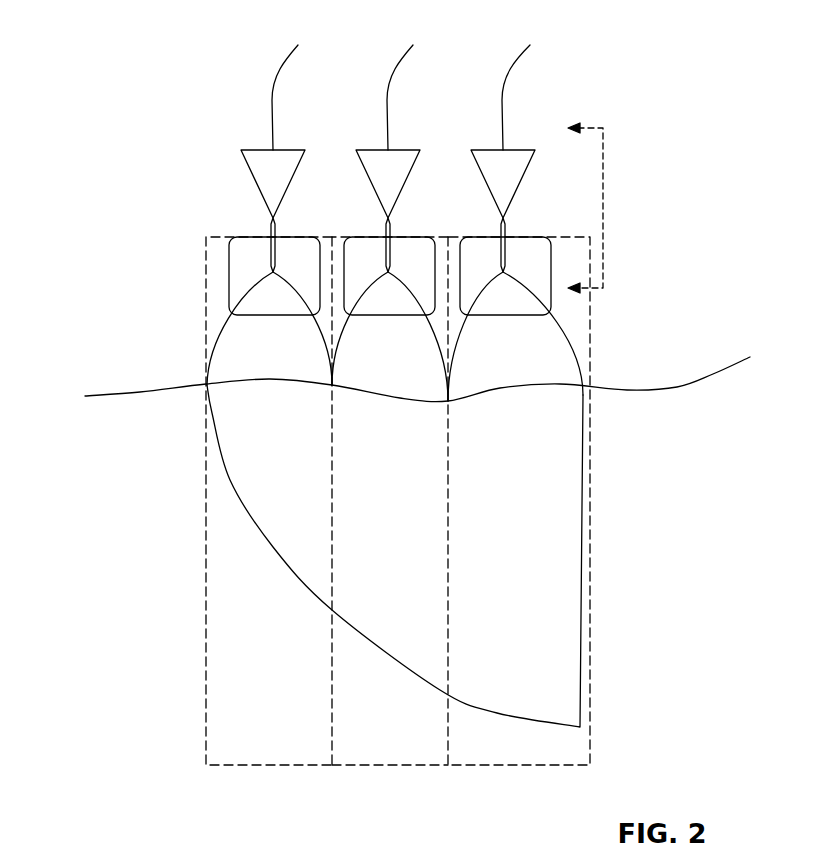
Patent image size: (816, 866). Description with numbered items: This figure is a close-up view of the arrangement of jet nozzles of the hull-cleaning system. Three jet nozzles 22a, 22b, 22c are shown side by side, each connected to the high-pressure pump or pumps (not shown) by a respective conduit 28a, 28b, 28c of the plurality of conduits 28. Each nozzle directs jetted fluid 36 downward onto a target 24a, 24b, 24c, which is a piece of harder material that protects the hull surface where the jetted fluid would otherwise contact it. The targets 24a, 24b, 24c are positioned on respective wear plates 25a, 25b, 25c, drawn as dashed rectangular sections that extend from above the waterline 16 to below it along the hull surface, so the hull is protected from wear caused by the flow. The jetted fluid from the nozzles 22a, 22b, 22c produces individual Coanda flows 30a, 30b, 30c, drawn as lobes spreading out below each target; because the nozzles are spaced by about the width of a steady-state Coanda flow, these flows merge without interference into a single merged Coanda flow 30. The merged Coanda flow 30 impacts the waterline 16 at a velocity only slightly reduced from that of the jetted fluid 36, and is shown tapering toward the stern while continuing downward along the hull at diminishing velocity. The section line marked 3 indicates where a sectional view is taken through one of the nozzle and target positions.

The waterline 16 is at (680, 393).
The jet nozzle 22a is at (250, 178).
The jet nozzle 22b is at (360, 163).
The jet nozzle 22c is at (480, 170).
The target 24a is at (237, 280).
The target 24b is at (412, 255).
The target 24c is at (542, 297).
The wear plate 25a is at (245, 754).
The wear plate 25b is at (367, 754).
The wear plate 25c is at (489, 754).
The conduits 28 is at (328, 502).
The conduit 28a is at (270, 97).
The conduit 28b is at (385, 96).
The conduit 28c is at (500, 96).
The merged Coanda flow 30 is at (375, 485).
The Coanda flow 30a is at (246, 374).
The Coanda flow 30b is at (367, 374).
The Coanda flow 30c is at (488, 374).
The jetted fluid 36 is at (272, 250).
The section line 3 is at (581, 208).